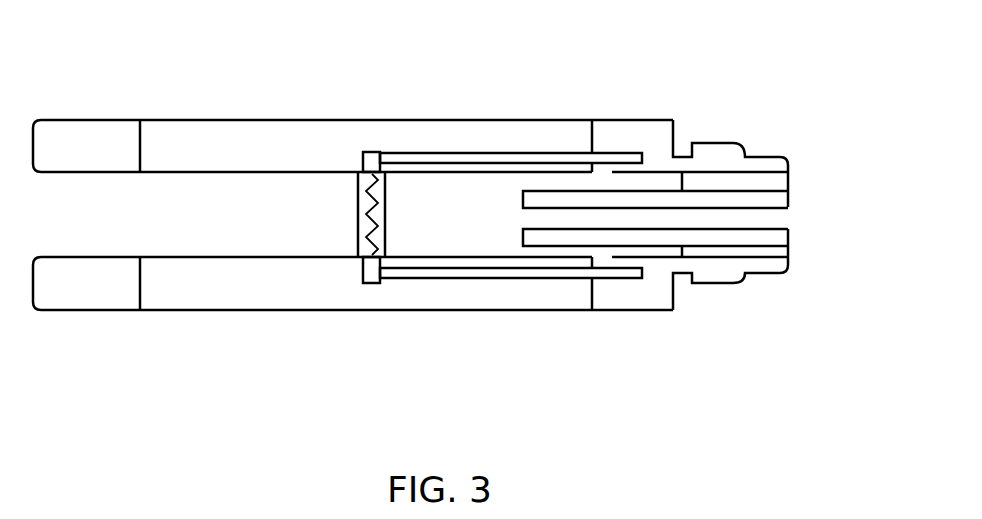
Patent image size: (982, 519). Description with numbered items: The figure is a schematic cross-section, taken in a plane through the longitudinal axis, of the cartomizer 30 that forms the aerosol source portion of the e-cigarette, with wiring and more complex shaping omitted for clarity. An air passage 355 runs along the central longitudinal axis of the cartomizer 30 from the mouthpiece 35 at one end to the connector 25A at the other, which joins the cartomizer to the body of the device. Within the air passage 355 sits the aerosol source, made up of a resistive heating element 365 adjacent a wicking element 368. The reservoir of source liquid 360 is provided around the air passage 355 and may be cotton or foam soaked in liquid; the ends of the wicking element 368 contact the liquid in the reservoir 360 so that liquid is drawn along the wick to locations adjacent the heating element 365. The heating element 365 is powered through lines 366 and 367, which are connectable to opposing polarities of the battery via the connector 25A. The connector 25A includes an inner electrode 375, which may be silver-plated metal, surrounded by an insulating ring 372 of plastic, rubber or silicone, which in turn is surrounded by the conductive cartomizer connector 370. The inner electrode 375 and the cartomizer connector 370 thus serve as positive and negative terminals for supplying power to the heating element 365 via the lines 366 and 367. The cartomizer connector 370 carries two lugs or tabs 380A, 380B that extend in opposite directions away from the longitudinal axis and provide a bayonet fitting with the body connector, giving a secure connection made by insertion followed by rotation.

The connector 25A is at (765, 280).
The cartomizer 30 is at (342, 312).
The mouthpiece 35 is at (93, 312).
The air passage 355 is at (210, 217).
The reservoir of source liquid 360 is at (272, 148).
The resistive heating element 365 is at (373, 165).
The power line 366 is at (497, 152).
The power line 367 is at (513, 278).
The wicking element 368 is at (358, 168).
The cartomizer connector 370 is at (750, 167).
The insulating ring 372 is at (765, 185).
The inner electrode 375 is at (752, 237).
The lug or tab 380A is at (713, 155).
The lug or tab 380B is at (715, 275).